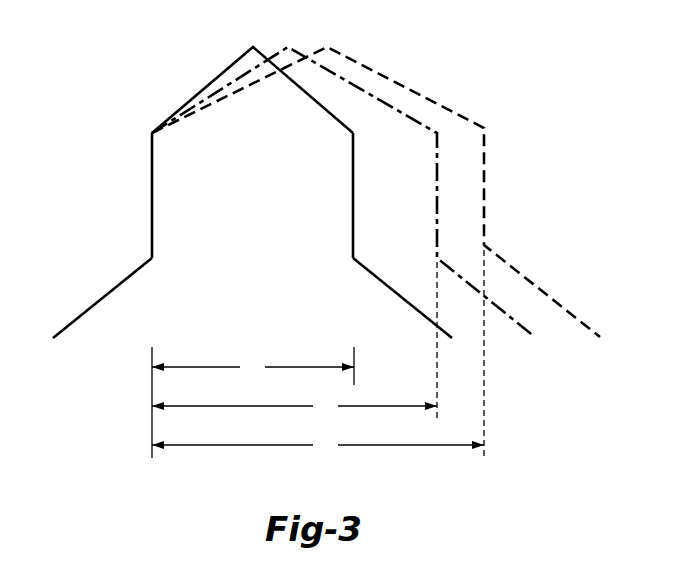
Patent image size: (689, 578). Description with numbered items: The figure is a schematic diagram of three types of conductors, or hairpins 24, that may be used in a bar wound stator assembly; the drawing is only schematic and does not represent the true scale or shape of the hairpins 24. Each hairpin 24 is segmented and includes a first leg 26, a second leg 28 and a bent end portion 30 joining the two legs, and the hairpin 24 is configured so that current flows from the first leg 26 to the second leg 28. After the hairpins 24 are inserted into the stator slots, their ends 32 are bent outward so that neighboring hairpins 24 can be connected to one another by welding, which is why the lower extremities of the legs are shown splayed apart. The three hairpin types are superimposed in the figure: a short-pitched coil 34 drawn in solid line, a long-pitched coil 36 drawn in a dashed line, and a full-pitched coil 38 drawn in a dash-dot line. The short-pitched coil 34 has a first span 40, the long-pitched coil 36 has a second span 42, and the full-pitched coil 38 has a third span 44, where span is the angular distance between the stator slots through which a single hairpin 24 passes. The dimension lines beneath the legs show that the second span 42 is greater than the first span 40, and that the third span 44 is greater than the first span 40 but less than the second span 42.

The hairpins 24 is at (499, 82).
The first leg 26 is at (152, 196).
The second leg 28 is at (353, 192).
The bent end portion 30 is at (205, 88).
The ends 32 is at (108, 293).
The short-pitched coil 34 is at (112, 232).
The long-pitched coil 36 is at (522, 247).
The full-pitched coil 38 is at (383, 92).
The first span 40 is at (253, 368).
The second span 42 is at (318, 446).
The third span 44 is at (294, 407).